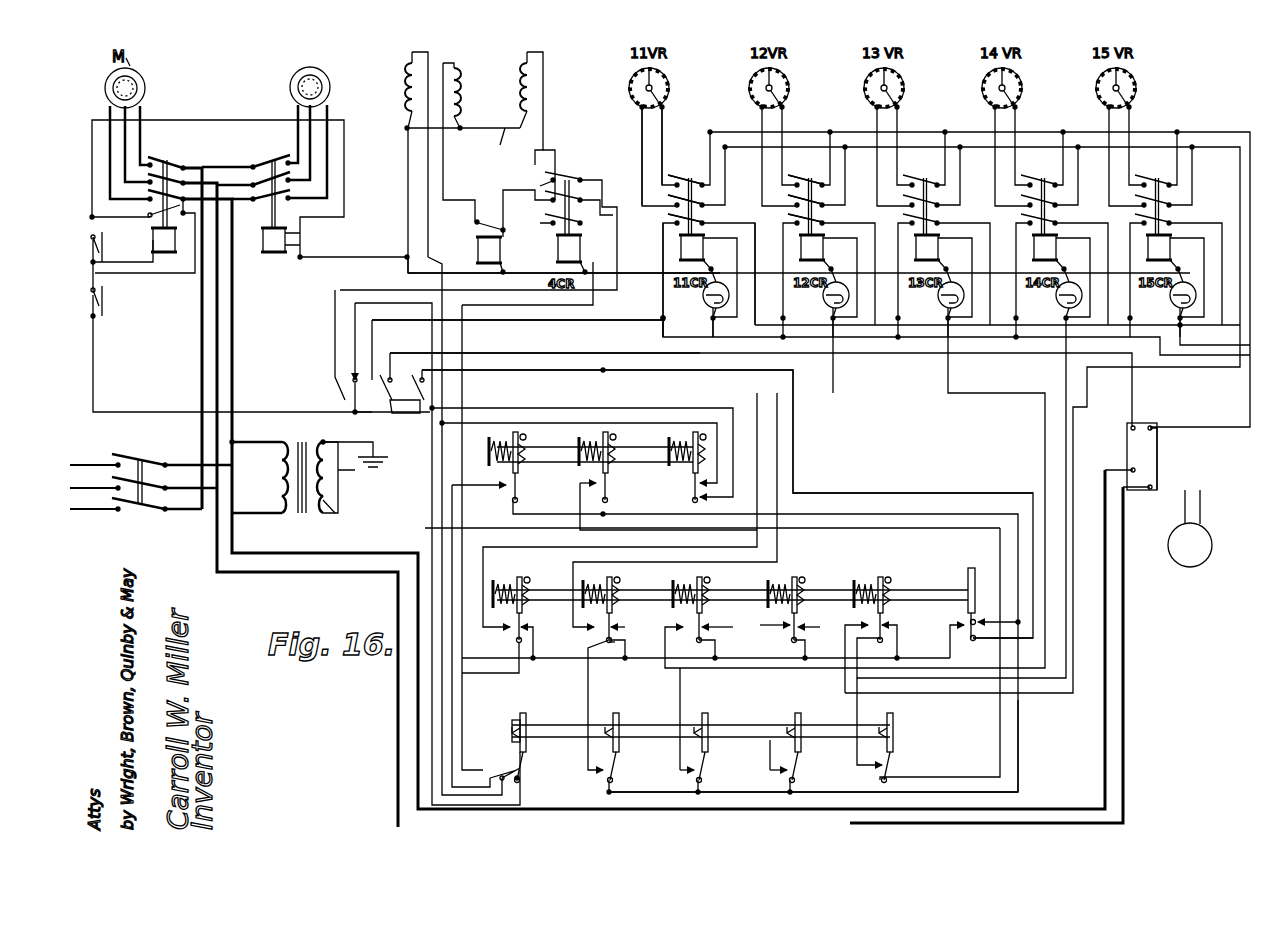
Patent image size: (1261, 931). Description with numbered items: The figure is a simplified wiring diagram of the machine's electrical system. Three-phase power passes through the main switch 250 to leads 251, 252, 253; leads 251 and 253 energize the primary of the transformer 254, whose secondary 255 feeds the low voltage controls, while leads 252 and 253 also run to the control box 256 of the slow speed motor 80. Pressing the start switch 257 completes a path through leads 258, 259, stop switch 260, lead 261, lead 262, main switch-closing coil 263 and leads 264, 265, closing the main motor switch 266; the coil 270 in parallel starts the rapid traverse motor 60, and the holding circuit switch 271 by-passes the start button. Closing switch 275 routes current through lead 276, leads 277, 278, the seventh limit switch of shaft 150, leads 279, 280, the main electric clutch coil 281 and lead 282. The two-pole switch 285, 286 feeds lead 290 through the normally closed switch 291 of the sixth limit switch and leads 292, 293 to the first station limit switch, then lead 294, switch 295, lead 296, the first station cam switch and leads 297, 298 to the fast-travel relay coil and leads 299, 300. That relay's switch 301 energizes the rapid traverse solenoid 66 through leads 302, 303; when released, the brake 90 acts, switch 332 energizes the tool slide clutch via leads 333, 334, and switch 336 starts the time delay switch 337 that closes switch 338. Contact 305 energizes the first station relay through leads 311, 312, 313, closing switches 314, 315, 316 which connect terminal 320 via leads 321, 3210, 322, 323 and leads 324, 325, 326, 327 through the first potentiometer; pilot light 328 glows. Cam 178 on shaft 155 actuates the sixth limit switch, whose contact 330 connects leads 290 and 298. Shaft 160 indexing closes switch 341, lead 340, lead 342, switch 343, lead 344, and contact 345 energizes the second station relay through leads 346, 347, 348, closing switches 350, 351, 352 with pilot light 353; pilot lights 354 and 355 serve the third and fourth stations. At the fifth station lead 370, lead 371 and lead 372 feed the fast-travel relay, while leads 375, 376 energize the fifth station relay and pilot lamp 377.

The rapid traverse motor 60 is at (324, 82).
The lead 262 is at (92, 160).
The main motor switch 266 is at (175, 158).
The lead 251 is at (202, 340).
The lead 252 is at (1127, 740).
The lead 253 is at (1106, 692).
The main switch-closing coil 263 is at (166, 252).
The switch-closing coil 270 is at (273, 252).
The holding circuit switch 271 is at (150, 215).
The lead 264 is at (308, 258).
The button start switch 257 is at (88, 246).
The lead 261 is at (88, 272).
The stop switch 260 is at (90, 310).
The lead 259 is at (126, 412).
The main switch 250 is at (153, 460).
The transformer 254 is at (300, 445).
The transformer secondary 255 is at (338, 508).
The lead 258 is at (345, 497).
The lead 265 is at (355, 320).
The lead 277 is at (352, 338).
The switch 275 is at (340, 390).
The lead 276 is at (358, 415).
The switch 285 is at (400, 413).
The switch 286 is at (440, 395).
The lead 280 is at (440, 345).
The lead 321 is at (572, 330).
The lead 290 is at (660, 372).
The lead 293 is at (955, 512).
The lead 278 is at (520, 408).
The lead 279 is at (585, 423).
The main electric clutch coil 281 is at (400, 100).
The lead 282 is at (408, 165).
The brake 90 is at (468, 78).
The rapid traverse clutch solenoid 66 is at (518, 95).
The lead 302 is at (548, 128).
The lead 303 is at (514, 146).
The lead 334 is at (447, 168).
The lead 299 is at (590, 262).
The switch 301 is at (596, 200).
The lead 333 is at (548, 168).
The switch 332 is at (570, 180).
The switch 336 is at (538, 210).
The switch 338 is at (475, 225).
The time delay switch 337 is at (478, 248).
The lead 300 is at (524, 273).
The lead 3210 is at (663, 316).
The lead 313 is at (706, 266).
The lead 348 is at (824, 266).
The lead 347 is at (915, 280).
The pilot light 355 is at (1066, 306).
The lead 376 is at (1190, 253).
The lead 327 is at (728, 140).
The control terminal 320 is at (1150, 380).
The lead 323 is at (1232, 330).
The lead 324 is at (1232, 352).
The lead 325 is at (648, 125).
The lead 326 is at (665, 140).
The switch 316 is at (683, 178).
The switch 315 is at (702, 186).
The switch 314 is at (705, 216).
The lead 322 is at (757, 268).
The lead 312 is at (740, 307).
The pilot light 328 is at (712, 312).
The switch 352 is at (808, 178).
The switch 351 is at (808, 200).
The switch 350 is at (822, 224).
The pilot light 353 is at (830, 312).
The pilot light 354 is at (950, 308).
The pilot lamp 377 is at (1178, 306).
The control box 256 is at (1127, 445).
The slow speed motor 80 is at (1168, 540).
The shaft 150 is at (572, 444).
The lead 294 is at (472, 492).
The lead 311 is at (536, 550).
The lead 298 is at (463, 550).
The shaft 155 is at (820, 590).
The lead 346 is at (674, 566).
The contact 305 is at (498, 636).
The lead 297 is at (537, 650).
The lead 296 is at (465, 708).
The switch 343 is at (614, 637).
The lead 344 is at (628, 655).
The contact 345 is at (592, 662).
The lead 342 is at (588, 708).
The lead 375 is at (968, 698).
The lead 372 is at (900, 645).
The lead 370 is at (938, 538).
The angularly fixed cam 178 is at (972, 578).
The contact 330 is at (958, 618).
The switch 291 is at (972, 642).
The lead 292 is at (1008, 640).
The shaft 160 is at (738, 728).
The switch 295 is at (495, 760).
The switch 341 is at (613, 773).
The lead 371 is at (850, 768).
The lead 340 is at (1020, 725).